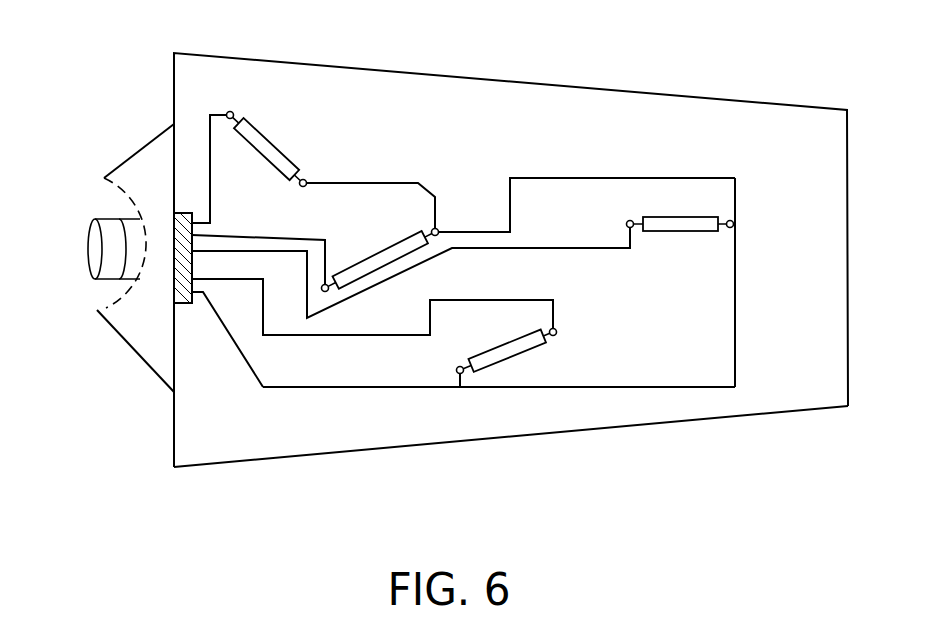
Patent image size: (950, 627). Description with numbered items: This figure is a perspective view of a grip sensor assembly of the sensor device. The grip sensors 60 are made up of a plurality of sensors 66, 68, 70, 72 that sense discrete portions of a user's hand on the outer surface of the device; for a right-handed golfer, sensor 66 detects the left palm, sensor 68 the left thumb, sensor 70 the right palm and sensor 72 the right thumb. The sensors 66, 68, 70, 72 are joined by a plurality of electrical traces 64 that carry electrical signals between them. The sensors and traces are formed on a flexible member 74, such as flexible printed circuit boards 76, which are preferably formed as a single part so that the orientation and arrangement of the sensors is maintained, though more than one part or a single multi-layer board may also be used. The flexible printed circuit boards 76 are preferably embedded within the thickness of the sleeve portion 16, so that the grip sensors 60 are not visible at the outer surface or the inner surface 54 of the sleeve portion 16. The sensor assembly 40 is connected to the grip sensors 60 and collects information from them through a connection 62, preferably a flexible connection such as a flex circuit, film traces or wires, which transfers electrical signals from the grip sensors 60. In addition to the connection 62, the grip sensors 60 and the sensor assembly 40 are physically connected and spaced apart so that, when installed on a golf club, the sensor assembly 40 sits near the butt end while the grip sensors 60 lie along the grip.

The sleeve portion 16 is at (771, 143).
The sensor assembly 40 is at (93, 249).
The inner surface 54 is at (623, 407).
The grip sensors 60 is at (527, 177).
The connection 62 is at (168, 213).
The electrical traces 64 is at (214, 110).
The sensor 66 is at (258, 125).
The sensor 68 is at (380, 248).
The sensor 70 is at (497, 357).
The sensor 72 is at (680, 217).
The flexible member 74 is at (308, 460).
The flexible printed circuit boards 76 is at (738, 246).